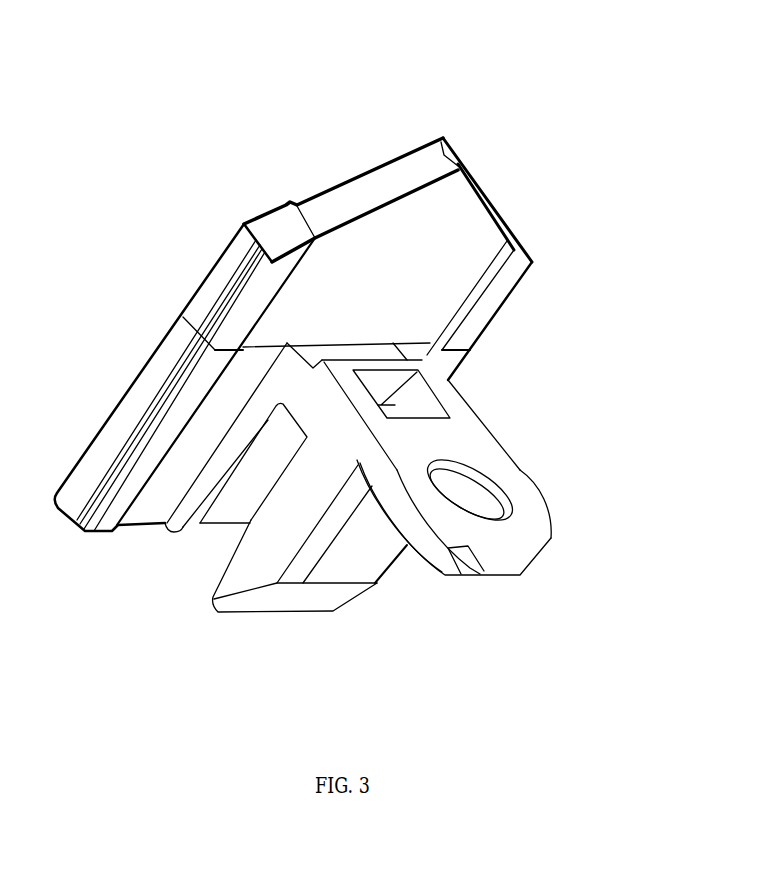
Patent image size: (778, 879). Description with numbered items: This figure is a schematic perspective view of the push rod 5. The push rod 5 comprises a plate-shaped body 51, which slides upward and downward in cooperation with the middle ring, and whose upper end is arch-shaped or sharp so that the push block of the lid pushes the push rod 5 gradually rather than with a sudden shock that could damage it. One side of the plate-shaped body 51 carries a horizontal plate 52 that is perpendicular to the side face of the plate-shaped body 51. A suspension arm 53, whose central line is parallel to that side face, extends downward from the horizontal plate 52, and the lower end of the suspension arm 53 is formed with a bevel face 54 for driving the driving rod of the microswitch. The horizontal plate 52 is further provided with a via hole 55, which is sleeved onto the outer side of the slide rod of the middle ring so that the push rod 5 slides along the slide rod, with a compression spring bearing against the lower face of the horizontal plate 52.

The push rod 5 is at (304, 133).
The plate-shaped body 51 is at (233, 282).
The horizontal plate 52 is at (477, 440).
The suspension arm 53 is at (257, 565).
The bevel face 54 is at (302, 598).
The via hole 55 is at (503, 492).